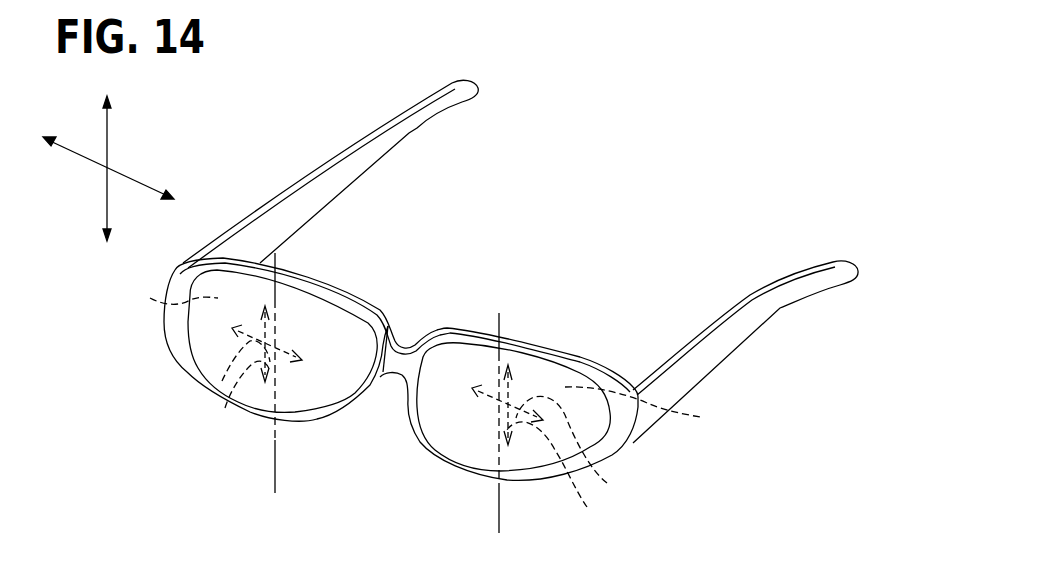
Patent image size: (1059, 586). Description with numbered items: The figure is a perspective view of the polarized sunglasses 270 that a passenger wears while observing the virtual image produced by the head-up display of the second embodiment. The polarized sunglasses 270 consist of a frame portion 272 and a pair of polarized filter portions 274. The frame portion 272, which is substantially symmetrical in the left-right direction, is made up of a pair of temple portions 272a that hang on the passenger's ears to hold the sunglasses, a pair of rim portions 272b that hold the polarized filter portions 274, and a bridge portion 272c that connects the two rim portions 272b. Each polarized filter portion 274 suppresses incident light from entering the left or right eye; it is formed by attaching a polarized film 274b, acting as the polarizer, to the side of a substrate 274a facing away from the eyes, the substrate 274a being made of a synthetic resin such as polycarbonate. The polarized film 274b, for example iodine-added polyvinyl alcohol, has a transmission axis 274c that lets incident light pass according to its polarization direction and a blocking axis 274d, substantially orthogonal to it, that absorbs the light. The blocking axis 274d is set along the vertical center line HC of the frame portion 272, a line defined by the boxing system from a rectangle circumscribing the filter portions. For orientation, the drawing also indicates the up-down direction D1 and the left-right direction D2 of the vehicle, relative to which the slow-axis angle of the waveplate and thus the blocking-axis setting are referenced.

The polarized sunglasses 270 is at (279, 146).
The frame portion 272 is at (511, 280).
The temple portions 272a is at (390, 146).
The rim portions 272b is at (348, 290).
The bridge portion 272c is at (469, 289).
The polarized filter portions 274 is at (436, 400).
The substrate 274a is at (150, 298).
The polarized film 274b is at (432, 425).
The transmission axis 274c is at (220, 383).
The blocking axis 274d is at (225, 409).
The vertical center line HC is at (270, 475).
The up-down direction D1 is at (107, 122).
The left-right direction D2 is at (127, 170).